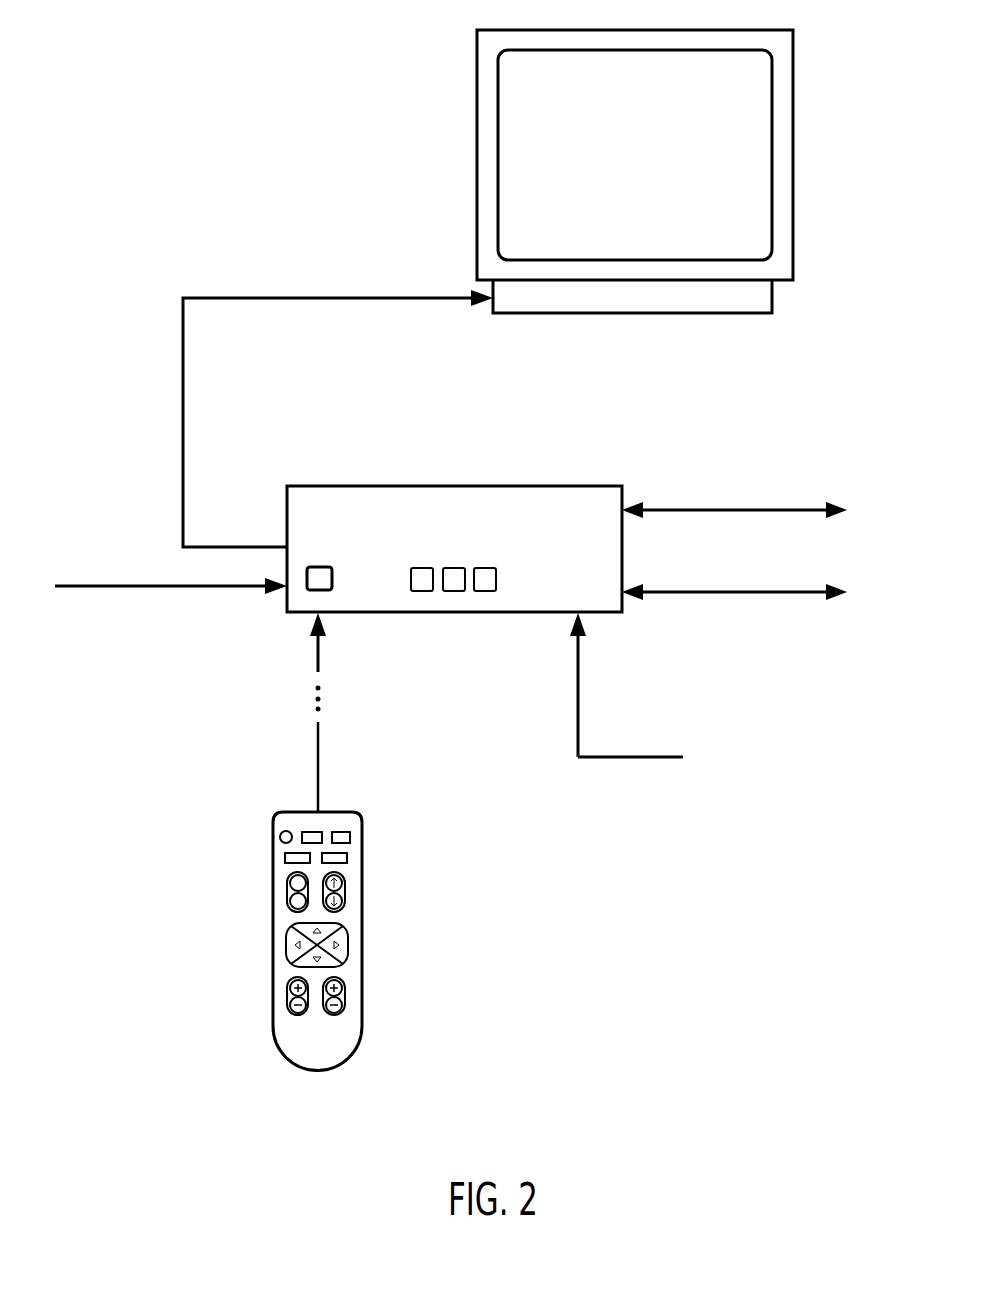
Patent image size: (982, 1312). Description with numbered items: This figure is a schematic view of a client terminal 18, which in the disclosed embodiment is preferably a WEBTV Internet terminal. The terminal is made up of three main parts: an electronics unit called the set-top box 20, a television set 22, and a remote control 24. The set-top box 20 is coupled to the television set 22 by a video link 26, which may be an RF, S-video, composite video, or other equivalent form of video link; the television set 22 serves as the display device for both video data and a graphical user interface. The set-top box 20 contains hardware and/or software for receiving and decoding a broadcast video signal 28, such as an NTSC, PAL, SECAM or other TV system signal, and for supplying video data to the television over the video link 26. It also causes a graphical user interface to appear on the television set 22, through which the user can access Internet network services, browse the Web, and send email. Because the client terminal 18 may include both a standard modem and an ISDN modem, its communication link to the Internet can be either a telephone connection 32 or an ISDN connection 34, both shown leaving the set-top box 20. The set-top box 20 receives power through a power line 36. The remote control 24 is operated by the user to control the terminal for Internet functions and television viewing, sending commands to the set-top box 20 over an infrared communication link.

The client terminal 18 is at (318, 132).
The set-top box 20 is at (605, 601).
The television set 22 is at (753, 247).
The remote control 24 is at (327, 1062).
The video link 26 is at (183, 395).
The broadcast video signal 28 is at (232, 590).
The telephone connection 32 is at (673, 507).
The ISDN connection 34 is at (673, 588).
The power line 36 is at (648, 760).